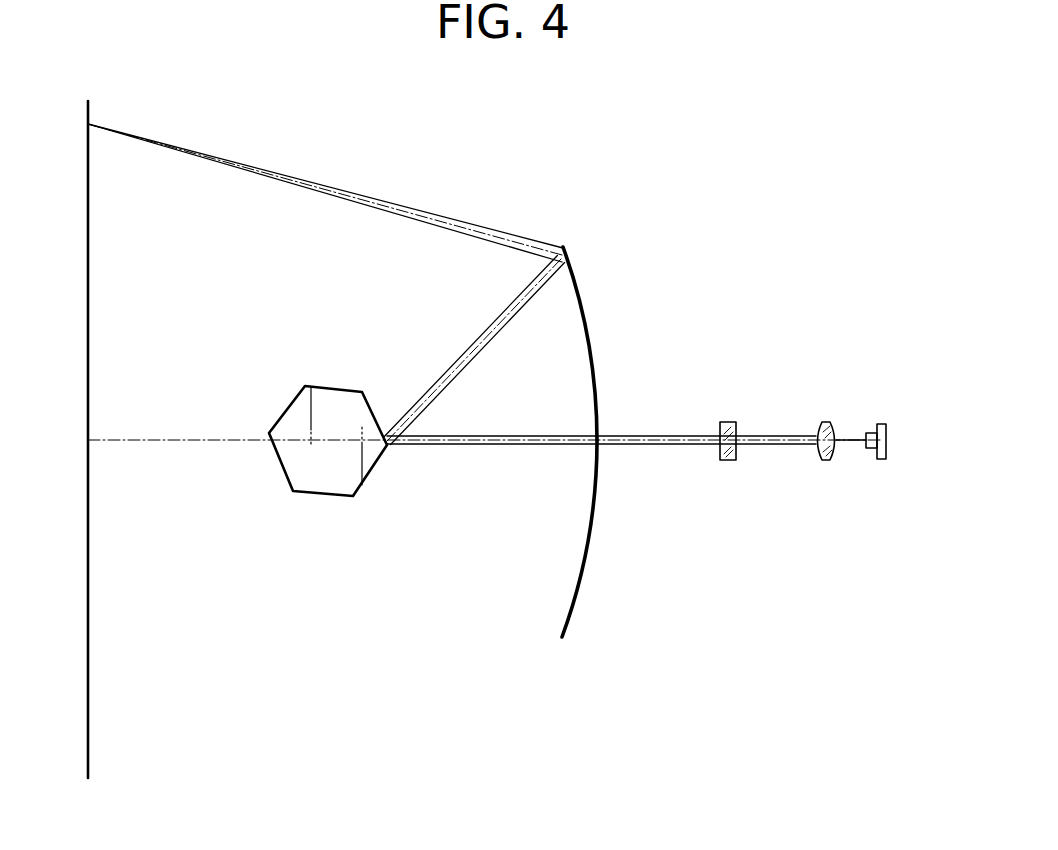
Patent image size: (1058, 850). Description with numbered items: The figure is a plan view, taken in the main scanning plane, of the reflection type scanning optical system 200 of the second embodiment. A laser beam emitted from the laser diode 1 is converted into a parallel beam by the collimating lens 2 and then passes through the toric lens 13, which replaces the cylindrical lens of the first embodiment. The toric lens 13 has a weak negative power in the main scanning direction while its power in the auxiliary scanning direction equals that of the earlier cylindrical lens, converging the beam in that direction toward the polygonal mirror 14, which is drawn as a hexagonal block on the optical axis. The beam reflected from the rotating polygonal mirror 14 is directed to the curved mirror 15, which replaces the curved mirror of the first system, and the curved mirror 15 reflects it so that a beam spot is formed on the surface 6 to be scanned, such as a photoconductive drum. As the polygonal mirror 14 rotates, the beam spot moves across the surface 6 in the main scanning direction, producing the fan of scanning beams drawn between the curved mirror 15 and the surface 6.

The reflection type scanning optical system 200 is at (686, 141).
The laser diode 1 is at (883, 461).
The collimating lens 2 is at (828, 462).
The toric lens 13 is at (727, 462).
The polygon mirror 14 is at (335, 398).
The curved mirror 15 is at (577, 574).
The surface to be scanned 6 is at (88, 715).